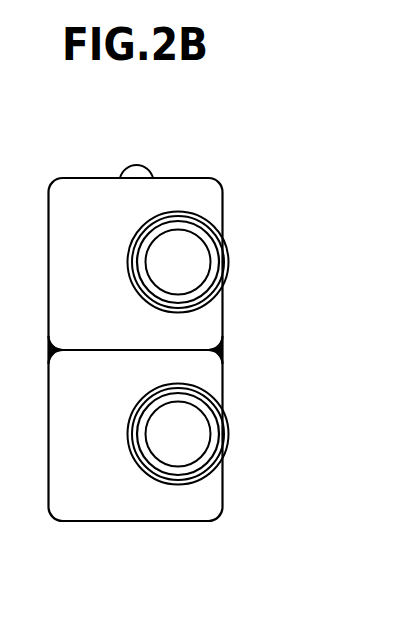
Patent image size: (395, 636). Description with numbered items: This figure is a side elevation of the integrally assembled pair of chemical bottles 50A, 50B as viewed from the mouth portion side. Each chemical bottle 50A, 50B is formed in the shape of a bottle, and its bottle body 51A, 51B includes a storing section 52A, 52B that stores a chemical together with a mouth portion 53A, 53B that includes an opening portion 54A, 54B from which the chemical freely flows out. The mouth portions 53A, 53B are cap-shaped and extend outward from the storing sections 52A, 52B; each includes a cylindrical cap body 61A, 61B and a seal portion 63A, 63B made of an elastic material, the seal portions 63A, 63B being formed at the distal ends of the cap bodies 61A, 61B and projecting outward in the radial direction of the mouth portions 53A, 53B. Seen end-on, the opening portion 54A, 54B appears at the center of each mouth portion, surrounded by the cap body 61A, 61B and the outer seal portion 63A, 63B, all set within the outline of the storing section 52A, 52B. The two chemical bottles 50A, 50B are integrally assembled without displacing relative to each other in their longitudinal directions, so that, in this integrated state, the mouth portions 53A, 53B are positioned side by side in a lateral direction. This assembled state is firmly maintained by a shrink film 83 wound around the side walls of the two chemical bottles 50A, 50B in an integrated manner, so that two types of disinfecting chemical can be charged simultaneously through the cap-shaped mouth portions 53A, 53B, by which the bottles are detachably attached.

The chemical bottle 50B is at (195, 160).
The chemical bottle 50A is at (195, 545).
The bottle body 51B is at (287, 173).
The bottle body 51A is at (288, 352).
The storing section 52B is at (223, 190).
The storing section 52A is at (223, 368).
The mouth portion 53B is at (229, 263).
The mouth portion 53A is at (229, 434).
The opening portion 54B is at (193, 266).
The opening portion 54A is at (193, 437).
The cap body 61B is at (140, 262).
The cap body 61A is at (140, 434).
The seal portion 63B is at (215, 300).
The seal portion 63A is at (215, 472).
The shrink film 83 is at (49, 350).